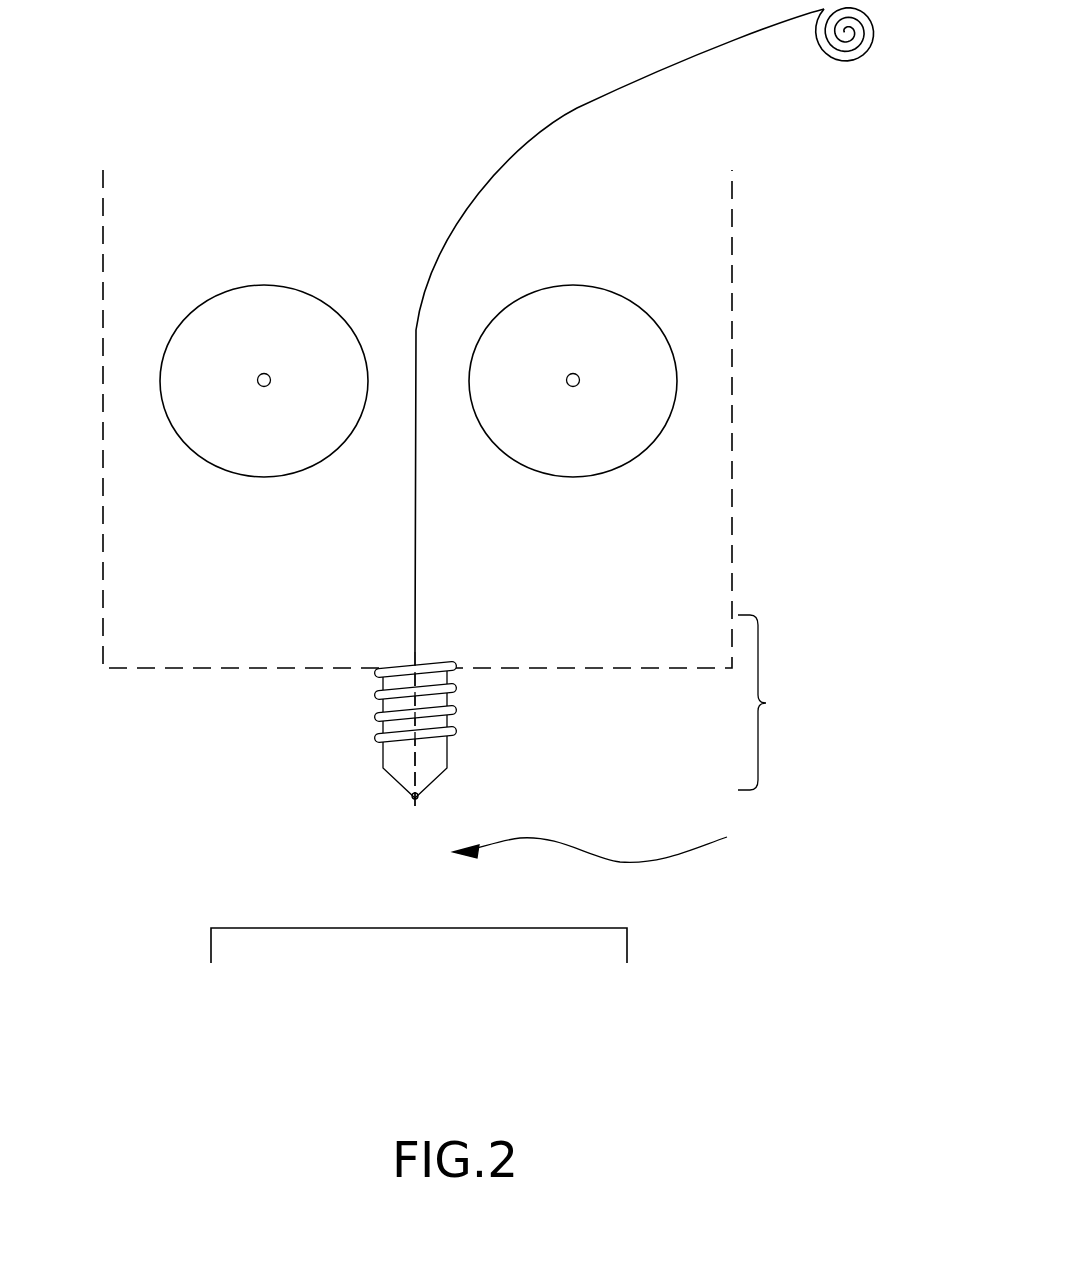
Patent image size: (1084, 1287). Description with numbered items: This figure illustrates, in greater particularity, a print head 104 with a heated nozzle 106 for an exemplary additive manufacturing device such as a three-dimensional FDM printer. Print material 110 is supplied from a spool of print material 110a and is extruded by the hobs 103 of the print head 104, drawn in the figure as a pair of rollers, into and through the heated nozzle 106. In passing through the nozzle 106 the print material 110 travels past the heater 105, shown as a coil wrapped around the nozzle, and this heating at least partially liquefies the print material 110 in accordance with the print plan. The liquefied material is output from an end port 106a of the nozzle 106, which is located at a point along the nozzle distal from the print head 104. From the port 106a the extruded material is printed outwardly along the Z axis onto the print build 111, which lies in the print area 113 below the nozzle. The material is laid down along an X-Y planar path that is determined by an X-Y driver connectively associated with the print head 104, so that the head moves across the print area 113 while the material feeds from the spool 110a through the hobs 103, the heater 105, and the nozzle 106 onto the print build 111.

The hobs 103 is at (250, 285).
The print head 104 is at (778, 702).
The heater 105 is at (376, 694).
The nozzle 106 is at (449, 701).
The end port 106a is at (413, 799).
The print material 110 is at (577, 108).
The spool of print material 110a is at (851, 60).
The print build 111 is at (627, 928).
The print area 113 is at (620, 839).